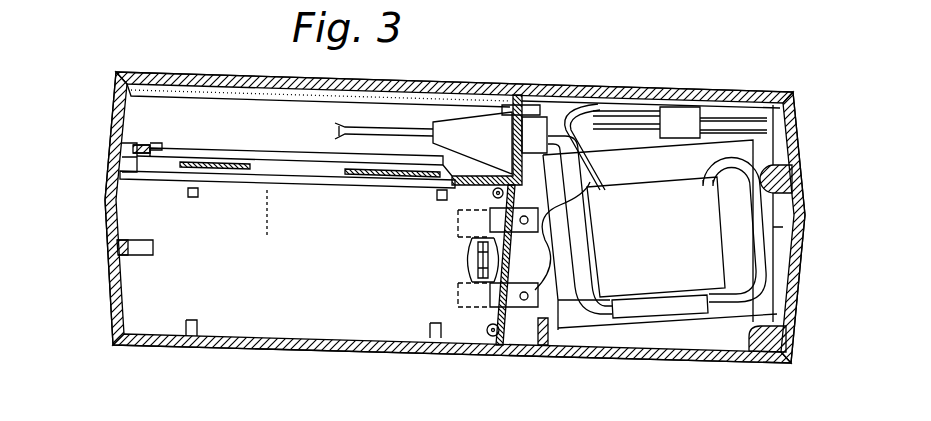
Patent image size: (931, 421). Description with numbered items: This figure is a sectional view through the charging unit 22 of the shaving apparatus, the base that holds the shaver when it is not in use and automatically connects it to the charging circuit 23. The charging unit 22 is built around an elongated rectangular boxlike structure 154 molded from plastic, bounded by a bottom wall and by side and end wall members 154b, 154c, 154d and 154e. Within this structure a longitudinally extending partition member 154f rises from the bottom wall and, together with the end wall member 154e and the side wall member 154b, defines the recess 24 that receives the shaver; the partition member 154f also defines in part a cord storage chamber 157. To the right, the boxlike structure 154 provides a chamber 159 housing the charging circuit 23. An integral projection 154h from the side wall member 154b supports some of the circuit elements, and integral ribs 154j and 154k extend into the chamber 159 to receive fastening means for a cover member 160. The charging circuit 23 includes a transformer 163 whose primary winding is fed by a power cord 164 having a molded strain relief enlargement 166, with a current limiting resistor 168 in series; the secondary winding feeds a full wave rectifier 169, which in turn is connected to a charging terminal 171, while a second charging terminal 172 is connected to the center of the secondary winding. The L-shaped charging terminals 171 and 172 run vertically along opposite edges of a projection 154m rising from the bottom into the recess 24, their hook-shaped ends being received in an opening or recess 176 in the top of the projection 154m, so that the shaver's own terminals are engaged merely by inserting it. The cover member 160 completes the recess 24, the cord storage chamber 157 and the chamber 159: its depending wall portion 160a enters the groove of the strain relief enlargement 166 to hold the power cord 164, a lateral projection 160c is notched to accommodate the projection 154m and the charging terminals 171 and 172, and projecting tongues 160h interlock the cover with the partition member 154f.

The charging unit 22 is at (355, 351).
The charging circuit 23 is at (672, 172).
The recess 24 is at (130, 219).
The boxlike structure 154 is at (444, 220).
The side wall member 154b is at (250, 348).
The side wall member 154c is at (190, 82).
The wall member 154d is at (800, 198).
The end wall member 154e is at (119, 159).
The partition member 154f is at (256, 173).
The integral projection 154h is at (551, 340).
The integral rib 154j is at (776, 172).
The integral rib 154k is at (763, 340).
The projection 154m is at (466, 243).
The cord storage chamber 157 is at (250, 98).
The chamber 159 is at (712, 333).
The cover member 160 is at (548, 95).
The depending wall portion 160a is at (530, 103).
The lateral projection 160c is at (494, 192).
The projecting tongues 160h is at (213, 162).
The transformer 163 is at (666, 240).
The power cord 164 is at (396, 125).
The strain relief enlargement 166 is at (458, 128).
The current limiting resistor 168 is at (656, 300).
The full wave rectifier 169 is at (640, 122).
The charging terminal 171 is at (462, 226).
The charging terminal 172 is at (462, 286).
The opening or recess 176 is at (497, 263).